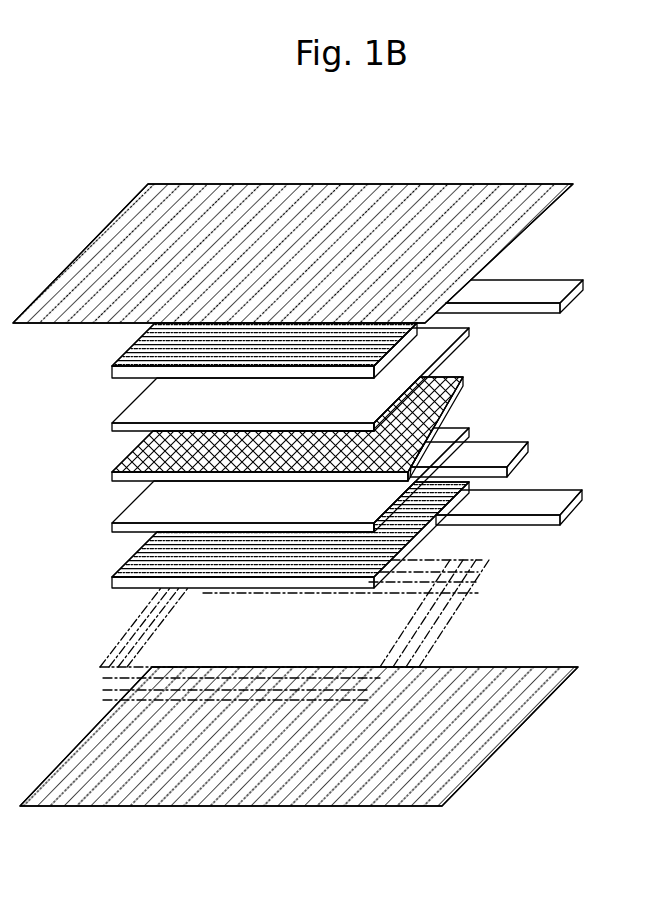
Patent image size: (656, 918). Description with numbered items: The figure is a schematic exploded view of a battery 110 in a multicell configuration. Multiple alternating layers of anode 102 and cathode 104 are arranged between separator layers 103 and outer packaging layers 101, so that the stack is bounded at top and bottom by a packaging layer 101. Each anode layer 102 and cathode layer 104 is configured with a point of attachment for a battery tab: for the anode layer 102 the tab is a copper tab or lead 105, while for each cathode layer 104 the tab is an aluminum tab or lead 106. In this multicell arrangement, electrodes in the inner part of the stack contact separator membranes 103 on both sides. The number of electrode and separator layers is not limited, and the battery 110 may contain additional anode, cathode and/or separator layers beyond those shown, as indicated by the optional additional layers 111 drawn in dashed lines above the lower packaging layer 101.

The battery 110 is at (190, 156).
The packaging layer 101 is at (143, 208).
The anode layer 102 is at (123, 463).
The separator layer 103 is at (127, 416).
The cathode layer 104 is at (135, 362).
The copper tab 105 is at (488, 453).
The aluminum tab 106 is at (530, 293).
The optional additional layers 111 is at (118, 648).